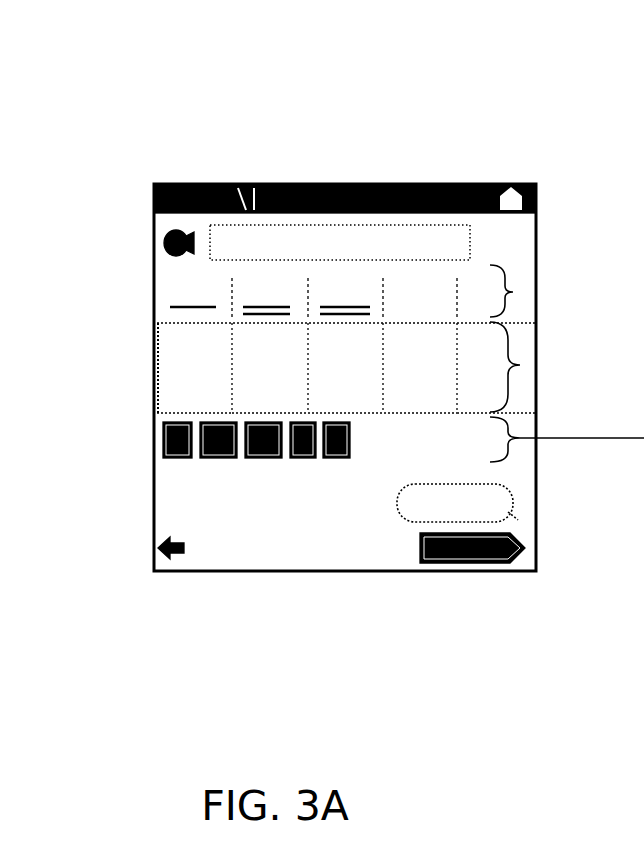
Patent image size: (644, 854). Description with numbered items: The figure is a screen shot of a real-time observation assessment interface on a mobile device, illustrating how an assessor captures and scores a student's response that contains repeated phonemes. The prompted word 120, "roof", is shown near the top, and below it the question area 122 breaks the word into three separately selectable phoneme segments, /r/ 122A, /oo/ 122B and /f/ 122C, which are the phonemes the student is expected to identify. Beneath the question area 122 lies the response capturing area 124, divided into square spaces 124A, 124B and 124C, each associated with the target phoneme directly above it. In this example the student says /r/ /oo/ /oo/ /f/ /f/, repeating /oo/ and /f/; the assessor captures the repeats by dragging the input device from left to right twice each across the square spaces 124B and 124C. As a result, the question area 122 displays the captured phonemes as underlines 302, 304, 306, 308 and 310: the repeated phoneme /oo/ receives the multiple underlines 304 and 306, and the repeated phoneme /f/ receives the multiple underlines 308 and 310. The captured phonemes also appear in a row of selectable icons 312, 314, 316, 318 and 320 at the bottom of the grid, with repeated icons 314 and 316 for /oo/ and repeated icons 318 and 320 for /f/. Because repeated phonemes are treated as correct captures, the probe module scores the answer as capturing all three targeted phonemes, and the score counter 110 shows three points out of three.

The score counter 110 is at (520, 230).
The prompted word 120 is at (247, 230).
The question area 122 is at (345, 192).
The phoneme segment /r/ 122A is at (193, 279).
The phoneme segment /oo/ 122B is at (266, 279).
The phoneme segment /f/ 122C is at (345, 279).
The response capturing area 124 is at (357, 410).
The square space 124A is at (202, 381).
The square space 124B is at (250, 363).
The square space 124C is at (338, 348).
The underline 302 is at (183, 304).
The underline 304 is at (238, 304).
The underline 306 is at (280, 312).
The underline 308 is at (336, 310).
The underline 310 is at (357, 320).
The selectable icon 312 is at (165, 450).
The selectable icon 314 is at (220, 458).
The selectable icon 316 is at (262, 458).
The selectable icon 318 is at (304, 458).
The selectable icon 320 is at (336, 458).